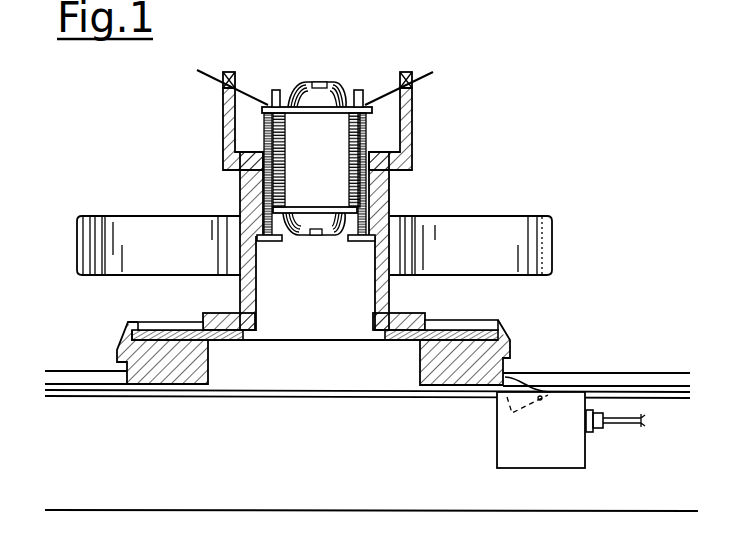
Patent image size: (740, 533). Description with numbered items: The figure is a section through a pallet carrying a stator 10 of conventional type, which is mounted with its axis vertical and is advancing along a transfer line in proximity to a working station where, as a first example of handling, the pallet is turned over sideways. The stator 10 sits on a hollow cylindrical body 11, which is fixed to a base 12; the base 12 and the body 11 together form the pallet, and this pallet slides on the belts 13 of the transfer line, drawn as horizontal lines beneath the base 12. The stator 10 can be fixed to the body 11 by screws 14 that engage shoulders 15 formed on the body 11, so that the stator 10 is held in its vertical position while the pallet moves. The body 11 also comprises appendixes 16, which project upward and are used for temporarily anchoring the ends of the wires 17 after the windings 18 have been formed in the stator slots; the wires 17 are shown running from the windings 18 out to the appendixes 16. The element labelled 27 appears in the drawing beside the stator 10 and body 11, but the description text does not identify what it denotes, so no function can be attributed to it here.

The stator 10 is at (332, 68).
The hollow cylindrical body 11 is at (409, 314).
The base 12 is at (482, 354).
The belts 13 is at (638, 388).
The screws 14 is at (273, 202).
The shoulders 15 is at (277, 241).
The appendixes 16 is at (229, 123).
The wires 17 is at (242, 93).
The windings 18 is at (290, 88).
The cylindrical magnet 27 is at (153, 215).